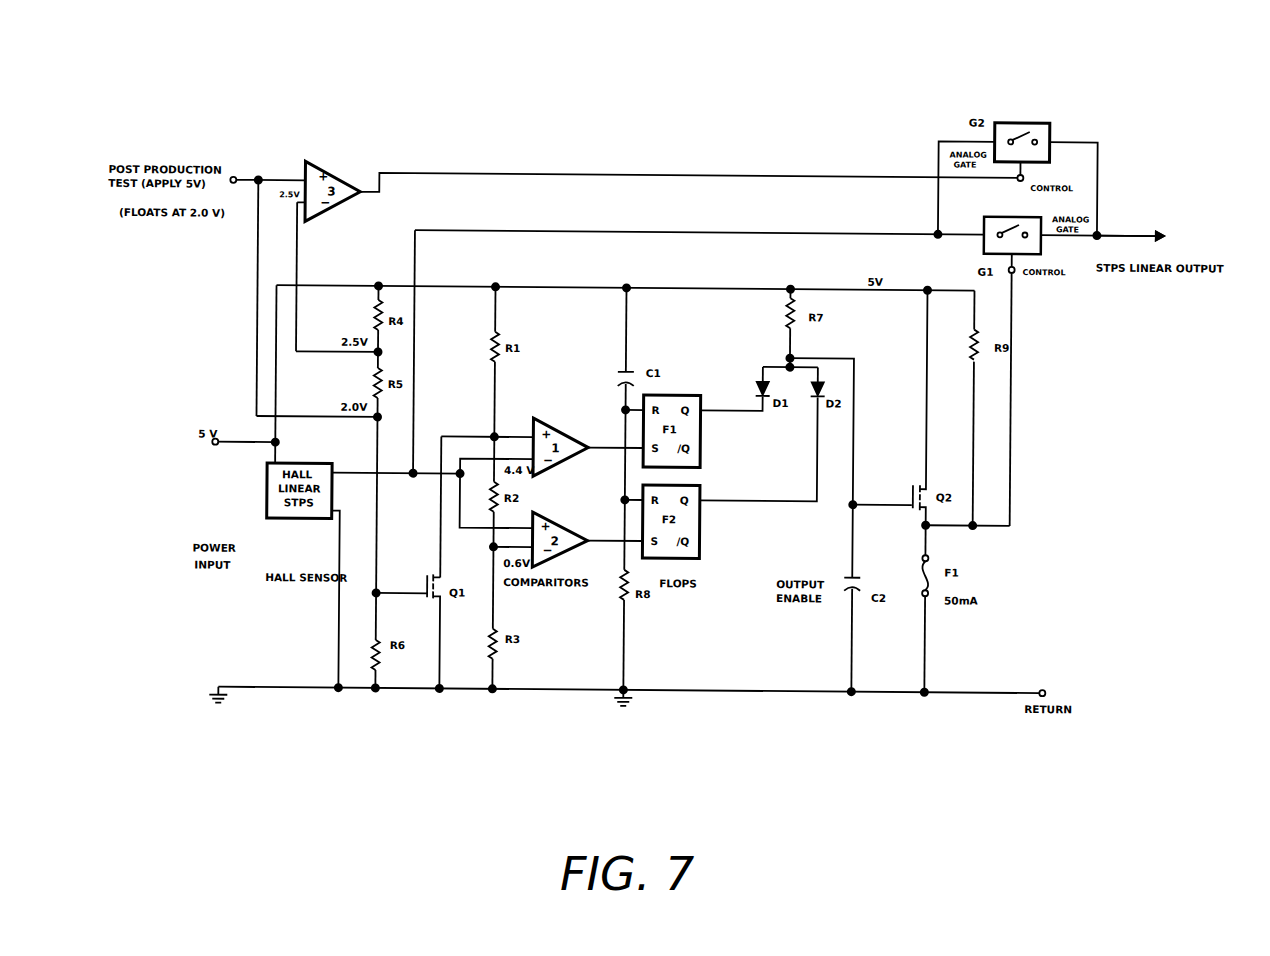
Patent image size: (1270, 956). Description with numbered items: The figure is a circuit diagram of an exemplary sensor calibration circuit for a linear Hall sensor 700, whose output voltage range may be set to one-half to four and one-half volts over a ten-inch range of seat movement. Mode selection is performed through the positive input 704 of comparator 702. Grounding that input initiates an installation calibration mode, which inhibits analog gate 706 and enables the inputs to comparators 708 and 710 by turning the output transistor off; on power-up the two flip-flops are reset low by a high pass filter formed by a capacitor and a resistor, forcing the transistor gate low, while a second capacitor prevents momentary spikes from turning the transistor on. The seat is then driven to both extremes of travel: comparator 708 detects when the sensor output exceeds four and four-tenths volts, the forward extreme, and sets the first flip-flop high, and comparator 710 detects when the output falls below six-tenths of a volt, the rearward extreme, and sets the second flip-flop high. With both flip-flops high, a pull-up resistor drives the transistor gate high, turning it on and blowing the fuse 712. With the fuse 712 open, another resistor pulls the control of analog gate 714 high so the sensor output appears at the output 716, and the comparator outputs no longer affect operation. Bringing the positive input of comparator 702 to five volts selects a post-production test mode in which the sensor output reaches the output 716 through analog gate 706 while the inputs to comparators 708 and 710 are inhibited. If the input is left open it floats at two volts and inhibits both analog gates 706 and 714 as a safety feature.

The linear Hall sensor 700 is at (202, 481).
The comparator 702 is at (361, 147).
The positive input 704 is at (198, 118).
The analog gate 706 is at (1084, 107).
The comparator 708 is at (572, 406).
The comparator 710 is at (576, 585).
The fuse 712 is at (1009, 609).
The analog gate 714 is at (1088, 287).
The output 716 is at (1183, 192).